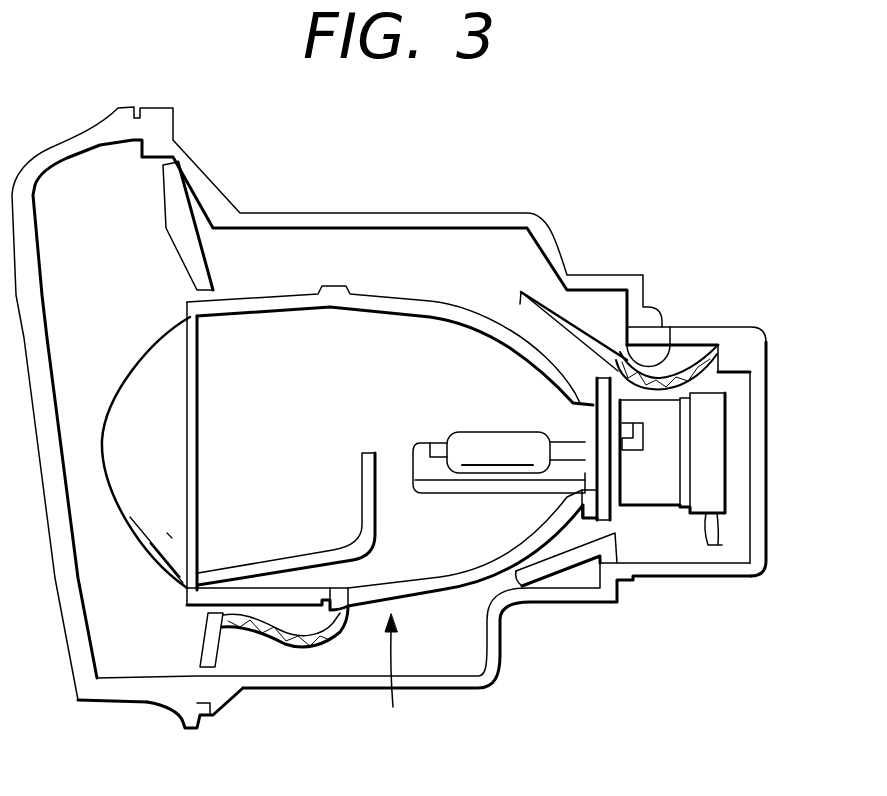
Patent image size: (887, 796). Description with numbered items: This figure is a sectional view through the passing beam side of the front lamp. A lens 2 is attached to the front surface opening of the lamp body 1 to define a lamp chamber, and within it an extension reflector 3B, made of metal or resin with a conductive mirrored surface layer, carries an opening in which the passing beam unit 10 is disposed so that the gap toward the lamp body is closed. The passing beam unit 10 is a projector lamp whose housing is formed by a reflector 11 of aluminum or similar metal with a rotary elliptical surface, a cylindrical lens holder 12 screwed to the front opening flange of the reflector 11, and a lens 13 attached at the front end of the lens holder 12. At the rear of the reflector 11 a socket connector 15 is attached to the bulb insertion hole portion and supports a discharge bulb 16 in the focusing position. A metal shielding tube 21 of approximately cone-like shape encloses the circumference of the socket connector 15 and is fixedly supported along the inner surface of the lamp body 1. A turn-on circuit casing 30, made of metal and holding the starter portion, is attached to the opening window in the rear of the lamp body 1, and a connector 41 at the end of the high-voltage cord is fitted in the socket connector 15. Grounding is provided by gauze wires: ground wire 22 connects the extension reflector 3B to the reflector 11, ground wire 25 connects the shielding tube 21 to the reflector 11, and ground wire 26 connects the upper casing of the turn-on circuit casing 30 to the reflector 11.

The lamp body 1 is at (585, 277).
The lens 2 is at (147, 707).
The extension reflector 3B is at (187, 225).
The passing beam unit 10 is at (397, 679).
The reflector 11 is at (443, 590).
The lens holder 12 is at (282, 298).
The lens 13 is at (152, 543).
The socket connector 15 is at (613, 470).
The discharge bulb 16 is at (478, 443).
The shielding tube 21 is at (580, 563).
The ground wire 22 is at (287, 643).
The ground wire 25 is at (670, 357).
The ground wire 26 is at (690, 348).
The turn-on circuit casing 30 is at (768, 532).
The connector 41 is at (650, 492).